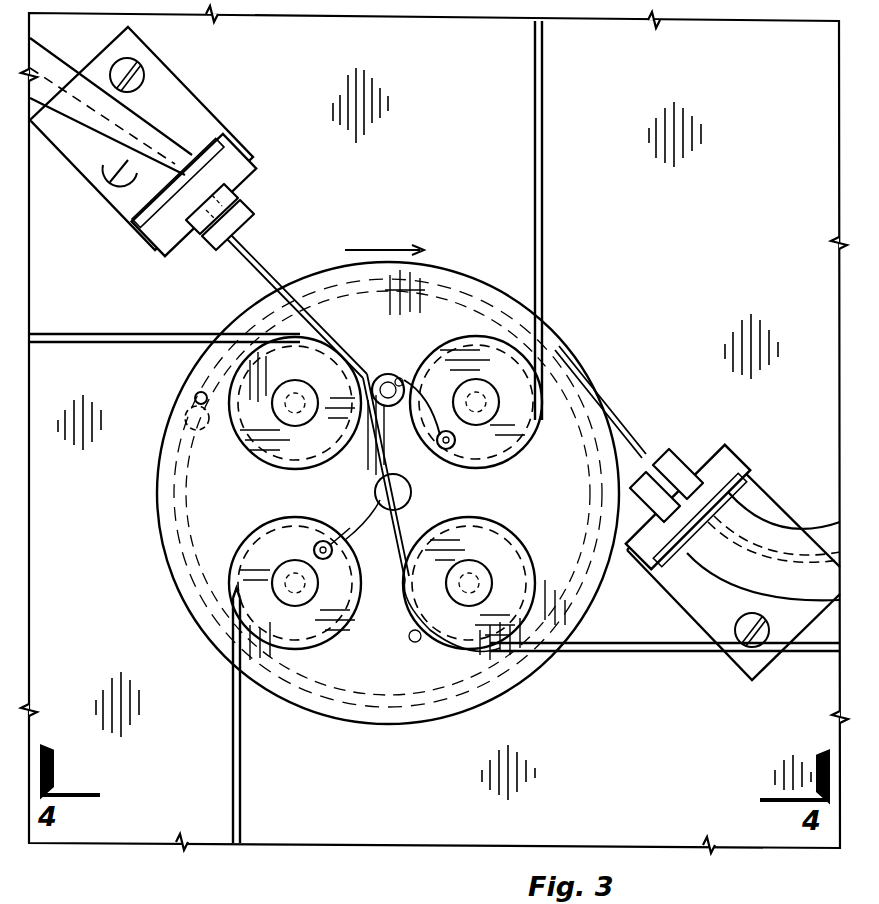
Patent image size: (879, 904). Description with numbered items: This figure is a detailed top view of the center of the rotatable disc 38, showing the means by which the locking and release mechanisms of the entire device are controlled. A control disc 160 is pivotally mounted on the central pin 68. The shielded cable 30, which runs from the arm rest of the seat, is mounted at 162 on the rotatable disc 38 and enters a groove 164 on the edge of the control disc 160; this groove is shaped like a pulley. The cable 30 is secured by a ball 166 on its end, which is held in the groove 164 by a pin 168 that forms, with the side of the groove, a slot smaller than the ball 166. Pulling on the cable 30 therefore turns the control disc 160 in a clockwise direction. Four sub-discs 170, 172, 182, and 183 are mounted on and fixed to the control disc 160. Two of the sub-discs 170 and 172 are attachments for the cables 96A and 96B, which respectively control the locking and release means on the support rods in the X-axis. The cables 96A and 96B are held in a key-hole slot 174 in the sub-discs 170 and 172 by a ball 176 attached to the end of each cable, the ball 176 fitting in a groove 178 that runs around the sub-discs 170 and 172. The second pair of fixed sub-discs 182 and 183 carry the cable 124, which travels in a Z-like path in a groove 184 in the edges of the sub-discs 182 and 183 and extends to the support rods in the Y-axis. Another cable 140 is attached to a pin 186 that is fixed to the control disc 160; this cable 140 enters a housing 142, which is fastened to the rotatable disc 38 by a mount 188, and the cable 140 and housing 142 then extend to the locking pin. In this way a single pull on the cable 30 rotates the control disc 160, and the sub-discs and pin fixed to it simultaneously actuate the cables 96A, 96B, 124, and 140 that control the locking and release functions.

The shielded cable 30 is at (636, 442).
The rotatable disc 38 is at (788, 113).
The central pin 68 is at (395, 474).
The cable 96A is at (232, 720).
The cable 96B is at (544, 80).
The cable 124 is at (82, 332).
The cable 140 is at (248, 252).
The housing 142 is at (66, 88).
The control disc 160 is at (584, 422).
The mount 162 is at (732, 462).
The groove 164 is at (578, 352).
The ball 166 is at (185, 419).
The pin 168 is at (200, 392).
The sub-disc 170 is at (448, 378).
The sub-disc 172 is at (248, 597).
The key-hole slot 174 is at (438, 372).
The ball 176 is at (316, 544).
The groove 178 is at (492, 302).
The fixed sub-disc 182 is at (250, 462).
The fixed sub-disc 183 is at (453, 642).
The groove 184 is at (192, 446).
The pin 186 is at (378, 374).
The mount 188 is at (168, 92).